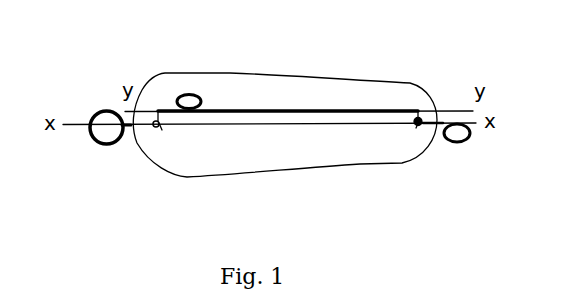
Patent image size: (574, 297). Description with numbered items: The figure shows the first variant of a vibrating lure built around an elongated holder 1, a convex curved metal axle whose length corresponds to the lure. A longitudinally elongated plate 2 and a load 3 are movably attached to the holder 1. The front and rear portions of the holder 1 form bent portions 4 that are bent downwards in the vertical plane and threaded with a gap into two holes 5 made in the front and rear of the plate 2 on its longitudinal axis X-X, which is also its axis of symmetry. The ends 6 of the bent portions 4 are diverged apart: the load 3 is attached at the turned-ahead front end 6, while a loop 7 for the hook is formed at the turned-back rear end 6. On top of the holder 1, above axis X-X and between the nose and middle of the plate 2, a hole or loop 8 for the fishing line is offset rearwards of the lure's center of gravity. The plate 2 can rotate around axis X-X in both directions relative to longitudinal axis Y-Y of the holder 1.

The holder 1 is at (280, 111).
The longitudinally elongated plate 2 is at (278, 98).
The load 3 is at (93, 113).
The bent portion 4 is at (159, 123).
The hole 5 is at (159, 123).
The end 6 is at (131, 125).
The loop 7 is at (448, 141).
The hole or loop 8 is at (189, 95).